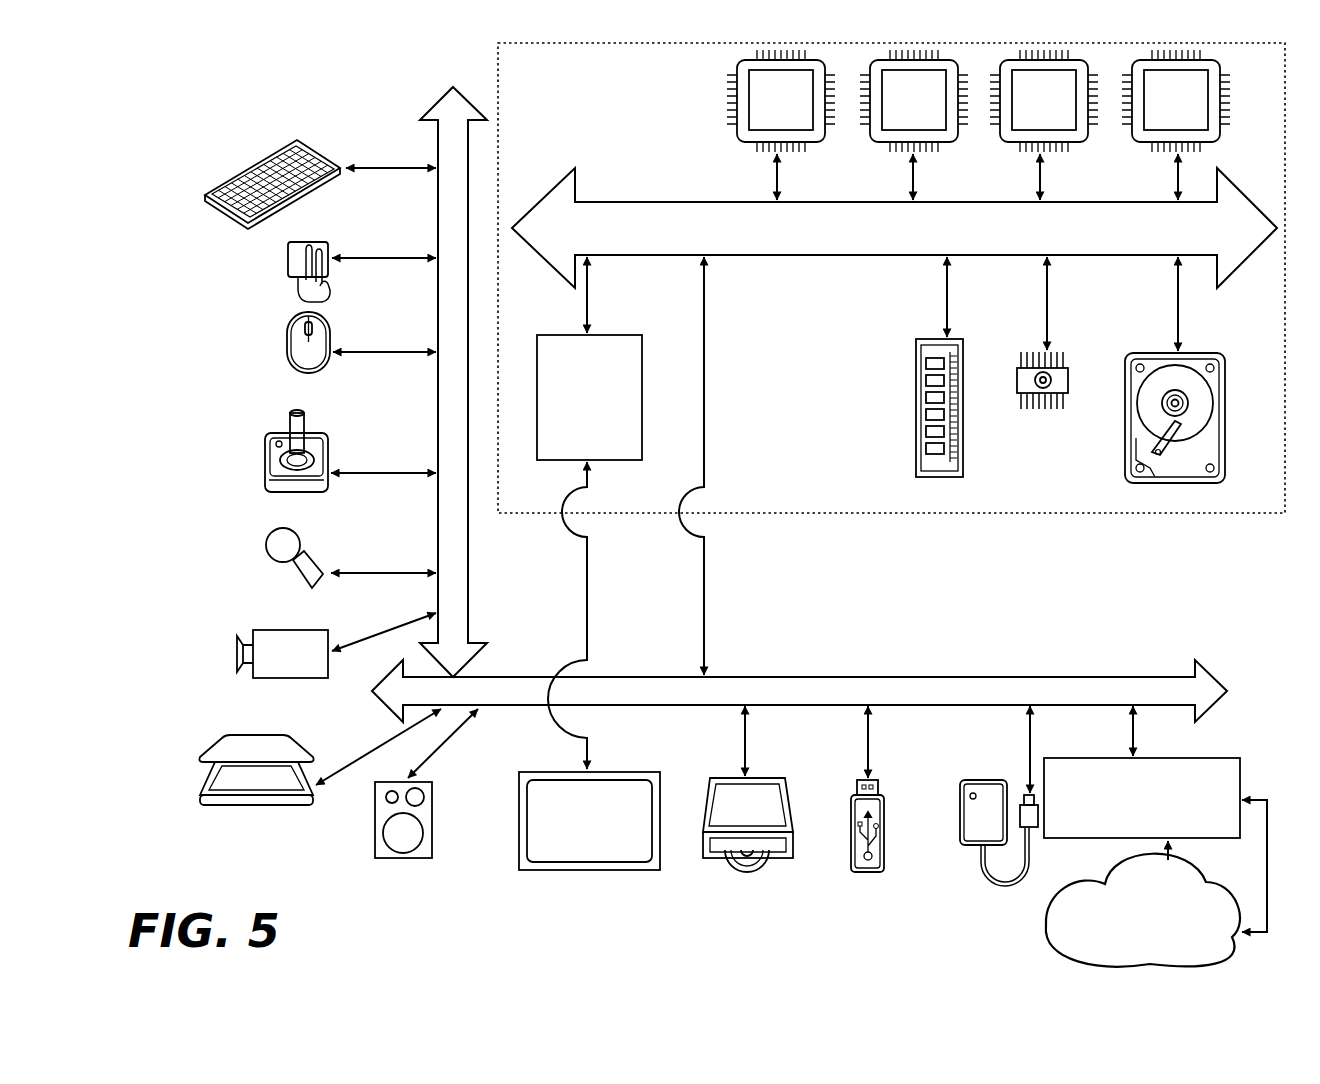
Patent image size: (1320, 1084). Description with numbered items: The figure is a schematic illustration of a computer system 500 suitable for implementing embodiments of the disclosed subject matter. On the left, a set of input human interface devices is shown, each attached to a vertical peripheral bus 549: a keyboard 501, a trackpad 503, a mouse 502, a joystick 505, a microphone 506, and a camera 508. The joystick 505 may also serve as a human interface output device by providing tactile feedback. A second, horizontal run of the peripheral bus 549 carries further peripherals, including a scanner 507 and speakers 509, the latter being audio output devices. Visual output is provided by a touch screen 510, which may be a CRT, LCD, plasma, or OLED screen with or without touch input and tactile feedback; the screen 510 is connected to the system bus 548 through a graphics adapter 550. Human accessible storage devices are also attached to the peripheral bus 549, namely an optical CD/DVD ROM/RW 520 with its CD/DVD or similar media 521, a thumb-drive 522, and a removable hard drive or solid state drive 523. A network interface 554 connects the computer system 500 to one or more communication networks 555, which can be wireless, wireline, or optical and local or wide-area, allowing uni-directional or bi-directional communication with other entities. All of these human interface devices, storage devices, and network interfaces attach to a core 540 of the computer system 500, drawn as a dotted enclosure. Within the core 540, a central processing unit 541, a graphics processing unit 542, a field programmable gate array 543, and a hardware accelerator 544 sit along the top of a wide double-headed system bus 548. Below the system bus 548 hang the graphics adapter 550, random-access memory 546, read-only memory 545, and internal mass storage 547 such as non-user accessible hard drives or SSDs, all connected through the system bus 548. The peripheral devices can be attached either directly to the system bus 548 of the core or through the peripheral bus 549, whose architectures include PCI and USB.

The computer system 500 is at (196, 104).
The keyboard 501 is at (205, 198).
The mouse 502 is at (287, 345).
The trackpad 503 is at (288, 262).
The joystick 505 is at (265, 472).
The microphone 506 is at (268, 542).
The scanner 507 is at (200, 795).
The camera 508 is at (237, 652).
The speakers 509 is at (398, 860).
The touch screen 510 is at (587, 872).
The CD/DVD ROM/RW 520 is at (790, 860).
The CD/DVD or the like media 521 is at (728, 866).
The thumb-drive 522 is at (868, 874).
The removable hard drive or solid state drive 523 is at (972, 848).
The core 540 is at (880, 515).
The central processing unit 541 is at (781, 125).
The graphics processing unit 542 is at (914, 125).
The field programmable gate array 543 is at (1044, 125).
The hardware accelerator 544 is at (1176, 125).
The read-only memory 545 is at (1037, 410).
The random-access memory 546 is at (916, 445).
The internal mass storage 547 is at (1133, 352).
The system bus 548 is at (894, 228).
The peripheral bus 549 is at (438, 128).
The graphics adapter 550 is at (589, 513).
The network interface 554 is at (1155, 819).
The communication networks 555 is at (1014, 914).